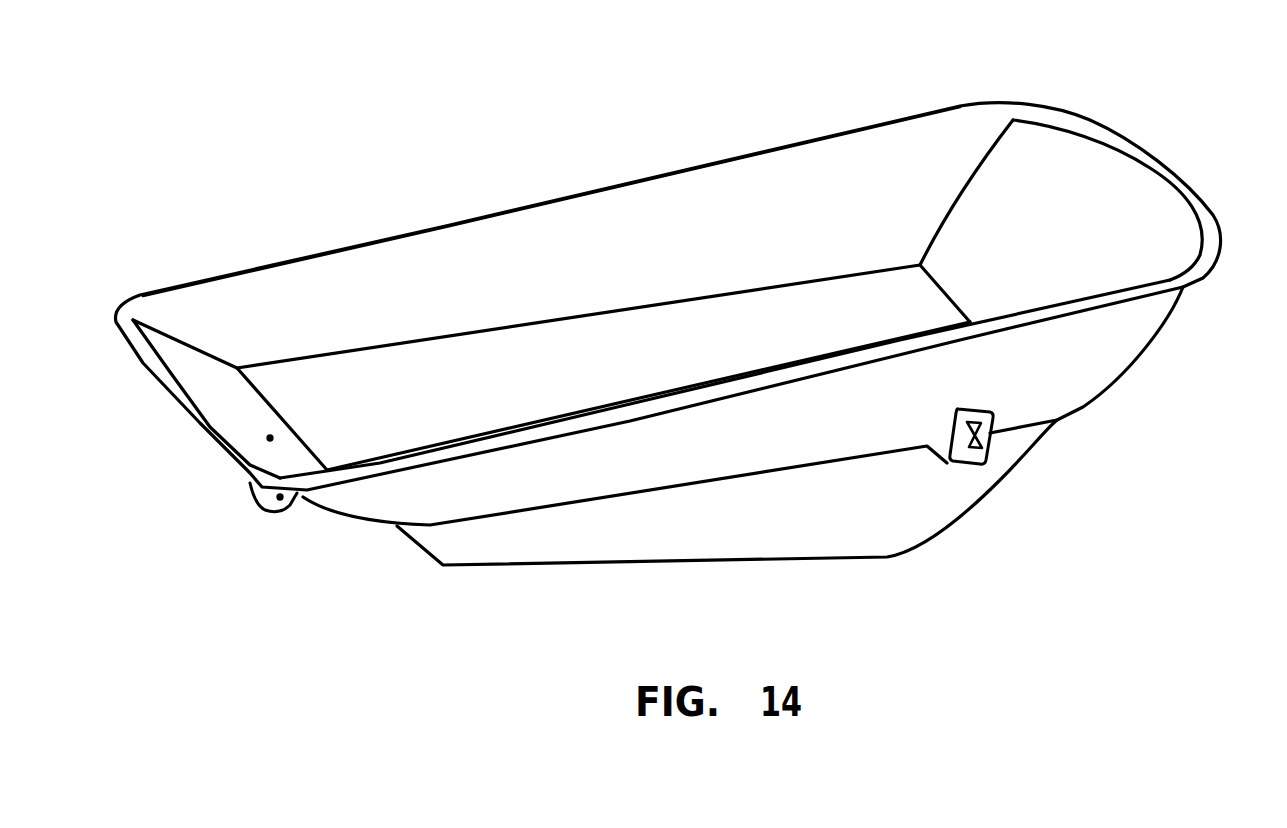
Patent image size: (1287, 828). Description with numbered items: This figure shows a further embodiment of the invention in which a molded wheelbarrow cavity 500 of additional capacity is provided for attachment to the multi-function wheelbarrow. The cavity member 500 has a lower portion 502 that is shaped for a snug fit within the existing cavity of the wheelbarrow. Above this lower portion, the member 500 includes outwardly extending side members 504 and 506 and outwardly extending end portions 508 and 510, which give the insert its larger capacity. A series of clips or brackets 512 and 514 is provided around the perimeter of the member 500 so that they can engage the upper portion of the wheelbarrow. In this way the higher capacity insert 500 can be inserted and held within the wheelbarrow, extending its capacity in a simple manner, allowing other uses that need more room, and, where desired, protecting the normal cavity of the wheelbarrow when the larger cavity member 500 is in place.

The molded wheelbarrow cavity 500 is at (660, 110).
The lower portion 502 is at (887, 533).
The side member 504 is at (1027, 387).
The side member 506 is at (807, 210).
The end portion 508 is at (1083, 223).
The end portion 510 is at (223, 397).
The clip or bracket 512 is at (963, 470).
The clip or bracket 514 is at (280, 513).